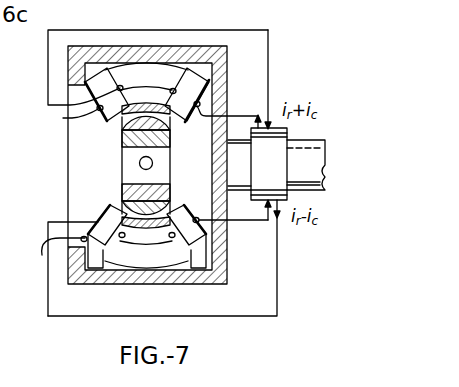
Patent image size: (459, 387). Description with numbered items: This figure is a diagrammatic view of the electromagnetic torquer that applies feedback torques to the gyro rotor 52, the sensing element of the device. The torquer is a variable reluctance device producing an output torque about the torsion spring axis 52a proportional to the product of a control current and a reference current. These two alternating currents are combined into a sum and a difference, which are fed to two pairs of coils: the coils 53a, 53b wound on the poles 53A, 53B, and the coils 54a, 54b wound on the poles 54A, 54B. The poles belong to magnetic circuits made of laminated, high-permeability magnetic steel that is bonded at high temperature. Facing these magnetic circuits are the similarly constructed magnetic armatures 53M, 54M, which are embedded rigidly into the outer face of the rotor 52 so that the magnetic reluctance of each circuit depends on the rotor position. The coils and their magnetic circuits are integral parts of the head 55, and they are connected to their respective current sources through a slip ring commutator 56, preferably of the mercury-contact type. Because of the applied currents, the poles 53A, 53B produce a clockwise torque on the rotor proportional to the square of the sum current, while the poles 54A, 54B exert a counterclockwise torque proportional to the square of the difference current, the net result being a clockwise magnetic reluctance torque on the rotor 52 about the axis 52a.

The gyro rotor 52 is at (127, 158).
The torsion spring axis 52a is at (140, 170).
The pole 53A is at (97, 73).
The pole 53B is at (206, 95).
The magnetic armature 53M is at (170, 124).
The coil 53a is at (67, 115).
The coil 53b is at (177, 80).
The pole 54A is at (100, 240).
The pole 54B is at (200, 250).
The magnetic armature 54M is at (167, 204).
The coil 54a is at (48, 253).
The coil 54b is at (169, 244).
The head 55 is at (200, 58).
The slip ring commutator 56 is at (279, 171).